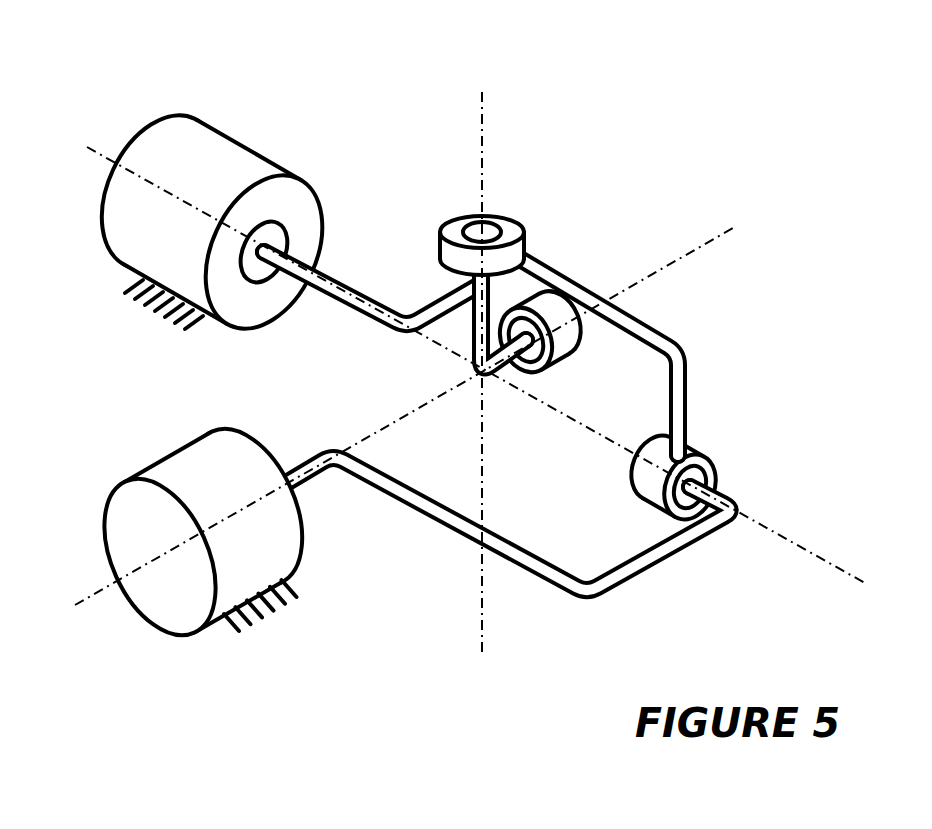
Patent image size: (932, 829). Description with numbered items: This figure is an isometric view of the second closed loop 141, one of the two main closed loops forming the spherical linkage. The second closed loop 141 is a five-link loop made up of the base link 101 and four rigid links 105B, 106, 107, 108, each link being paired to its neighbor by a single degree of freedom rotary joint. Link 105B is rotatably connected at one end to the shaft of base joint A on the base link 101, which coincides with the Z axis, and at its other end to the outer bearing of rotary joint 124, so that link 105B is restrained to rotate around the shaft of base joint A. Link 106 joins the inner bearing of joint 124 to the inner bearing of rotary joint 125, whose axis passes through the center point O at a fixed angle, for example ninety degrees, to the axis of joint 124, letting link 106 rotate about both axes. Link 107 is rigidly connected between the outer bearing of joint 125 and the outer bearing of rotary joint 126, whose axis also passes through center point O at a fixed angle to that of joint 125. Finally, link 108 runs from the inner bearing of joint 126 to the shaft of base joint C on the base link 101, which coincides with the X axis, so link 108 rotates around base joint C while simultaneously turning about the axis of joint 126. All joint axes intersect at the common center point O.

The second closed loop 141 is at (667, 123).
The base link 101 is at (212, 379).
The link 105B is at (330, 287).
The link 106 is at (503, 360).
The link 107 is at (678, 403).
The link 108 is at (647, 566).
The rotary joint 124 is at (546, 312).
The rotary joint 125 is at (445, 252).
The rotary joint 126 is at (717, 477).